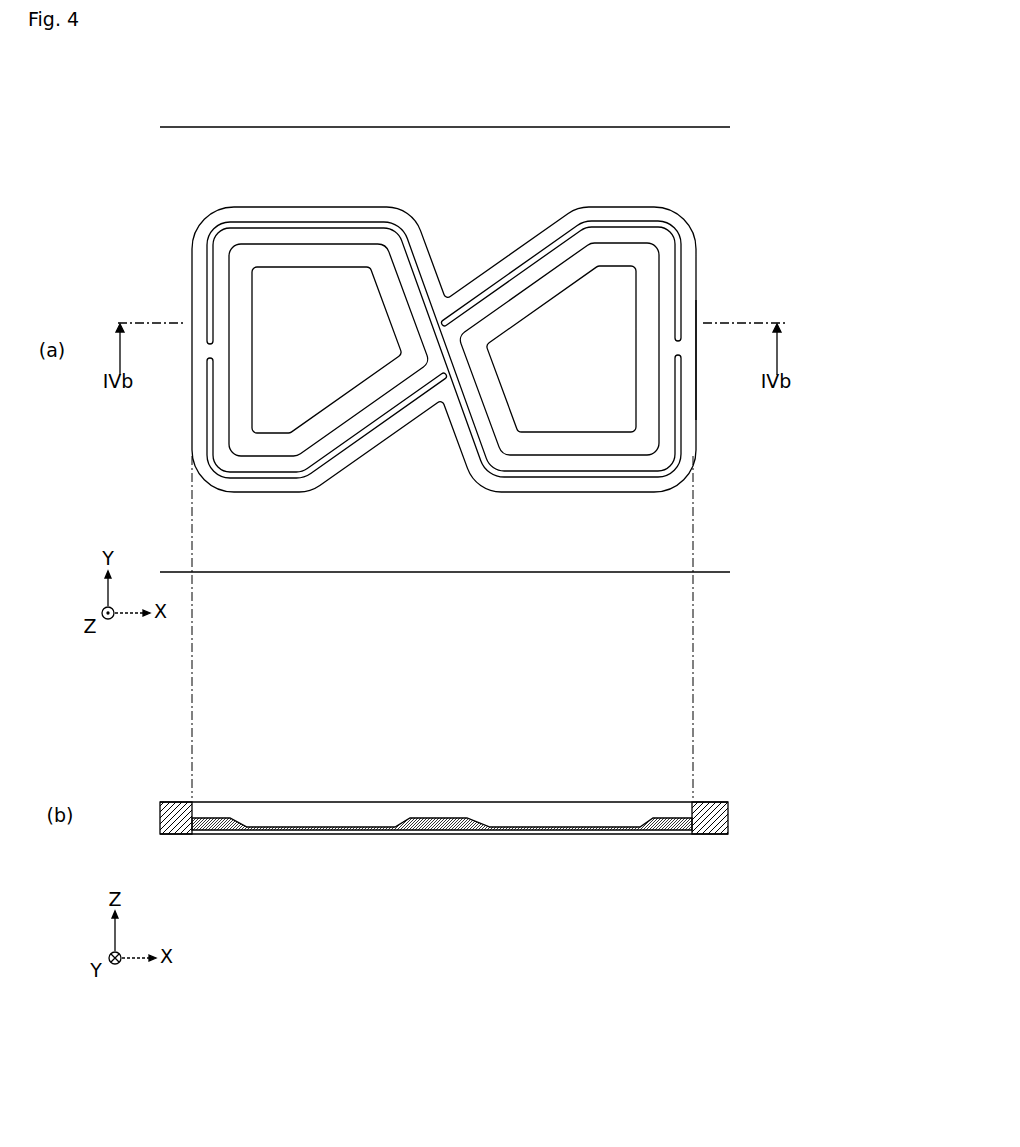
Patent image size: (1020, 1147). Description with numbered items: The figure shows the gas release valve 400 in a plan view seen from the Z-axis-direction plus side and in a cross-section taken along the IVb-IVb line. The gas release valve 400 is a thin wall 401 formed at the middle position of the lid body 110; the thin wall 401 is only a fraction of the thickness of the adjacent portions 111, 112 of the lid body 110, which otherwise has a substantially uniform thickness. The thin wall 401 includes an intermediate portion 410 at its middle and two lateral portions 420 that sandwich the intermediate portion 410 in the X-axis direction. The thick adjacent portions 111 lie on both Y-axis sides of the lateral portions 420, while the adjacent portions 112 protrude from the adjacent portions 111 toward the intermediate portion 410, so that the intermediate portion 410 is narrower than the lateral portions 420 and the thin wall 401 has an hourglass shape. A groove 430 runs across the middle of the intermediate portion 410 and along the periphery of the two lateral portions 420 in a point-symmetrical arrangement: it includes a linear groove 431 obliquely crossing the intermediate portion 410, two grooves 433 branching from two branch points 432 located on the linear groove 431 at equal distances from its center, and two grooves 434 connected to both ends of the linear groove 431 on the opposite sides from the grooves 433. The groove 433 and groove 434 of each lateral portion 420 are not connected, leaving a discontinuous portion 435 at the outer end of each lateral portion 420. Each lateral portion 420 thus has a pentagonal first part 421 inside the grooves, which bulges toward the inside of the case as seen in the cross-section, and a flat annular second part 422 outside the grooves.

The lid body 110 is at (690, 124).
The adjacent portion 111 is at (256, 538).
The adjacent portion 112 is at (449, 266).
The gas release valve 400 is at (463, 175).
The thin wall 401 is at (702, 424).
The intermediate portion 410 is at (443, 292).
The lateral portion 420 is at (230, 184).
The first part 421 is at (287, 303).
The second part 422 is at (205, 303).
The groove 430 is at (196, 426).
The linear groove 431 is at (420, 289).
The branch point 432 is at (447, 328).
The groove 433 is at (527, 264).
The groove 434 is at (358, 221).
The discontinuous portion 435 is at (205, 352).